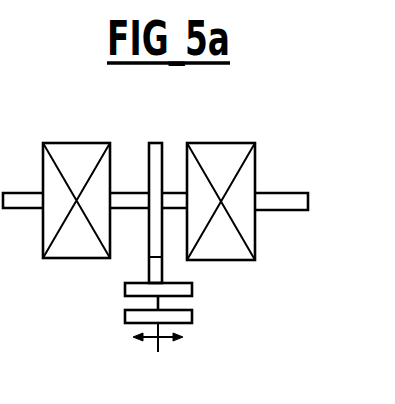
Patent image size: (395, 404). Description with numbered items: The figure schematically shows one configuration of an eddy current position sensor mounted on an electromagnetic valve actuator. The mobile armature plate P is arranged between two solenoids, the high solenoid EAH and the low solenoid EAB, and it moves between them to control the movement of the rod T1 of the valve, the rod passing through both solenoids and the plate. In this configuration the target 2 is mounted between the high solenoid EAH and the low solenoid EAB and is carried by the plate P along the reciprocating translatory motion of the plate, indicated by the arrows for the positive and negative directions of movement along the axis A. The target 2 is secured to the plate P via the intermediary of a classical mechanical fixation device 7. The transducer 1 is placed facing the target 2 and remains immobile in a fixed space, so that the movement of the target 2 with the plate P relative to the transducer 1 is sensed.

The transducer 1 is at (192, 318).
The target 2 is at (124, 288).
The mechanical fixation device 7 is at (172, 269).
The mobile armature plate P is at (156, 136).
The rod T1 is at (303, 192).
The low solenoid EAB is at (76, 143).
The high solenoid EAH is at (221, 143).
The axis of movement A is at (160, 350).